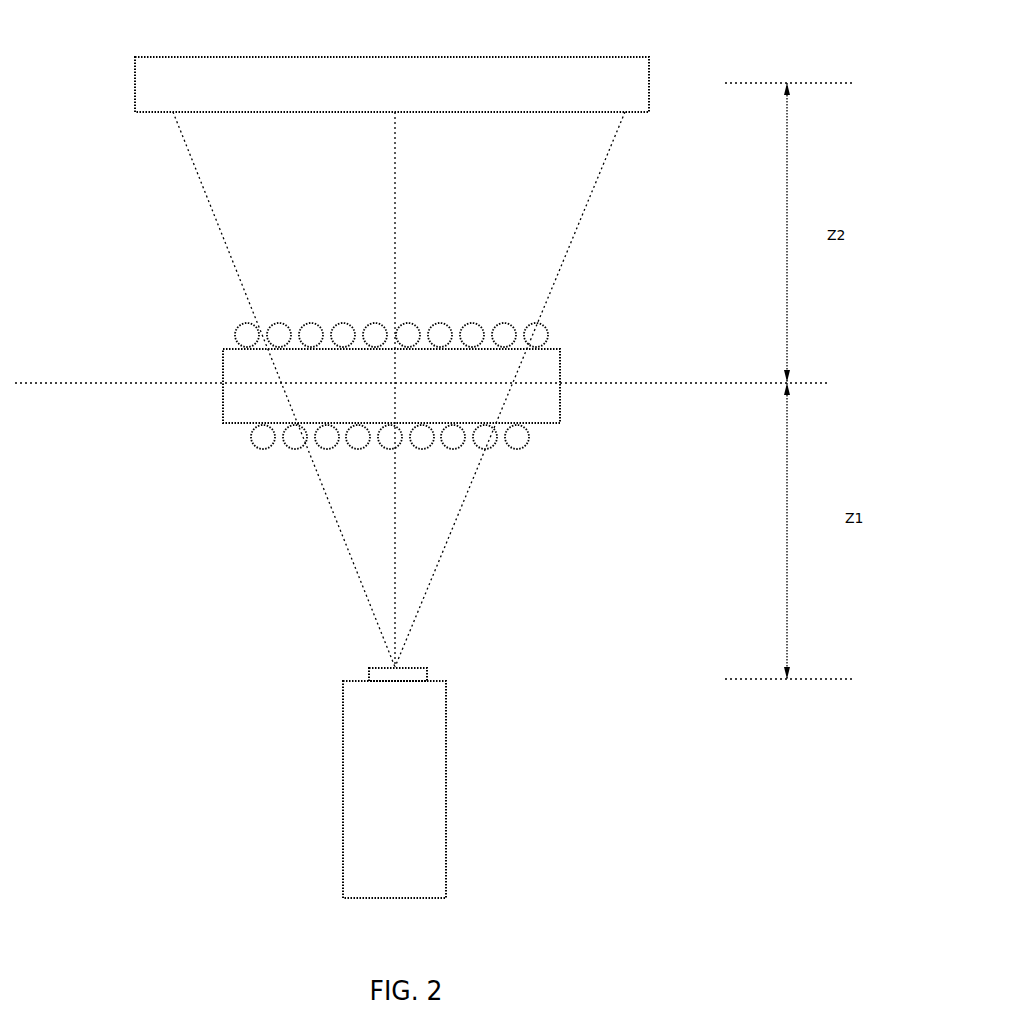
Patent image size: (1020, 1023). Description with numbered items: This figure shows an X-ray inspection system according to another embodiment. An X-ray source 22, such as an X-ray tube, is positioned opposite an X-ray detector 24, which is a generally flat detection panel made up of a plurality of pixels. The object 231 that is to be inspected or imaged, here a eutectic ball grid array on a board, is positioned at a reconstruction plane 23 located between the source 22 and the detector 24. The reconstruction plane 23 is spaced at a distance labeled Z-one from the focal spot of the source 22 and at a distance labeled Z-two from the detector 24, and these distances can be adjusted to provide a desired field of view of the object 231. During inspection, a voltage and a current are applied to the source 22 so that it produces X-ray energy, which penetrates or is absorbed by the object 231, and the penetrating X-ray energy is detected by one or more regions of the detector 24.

The X-ray detector 24 is at (649, 60).
The object 231 is at (560, 360).
The reconstruction plane 23 is at (840, 382).
The X-ray source 22 is at (446, 762).